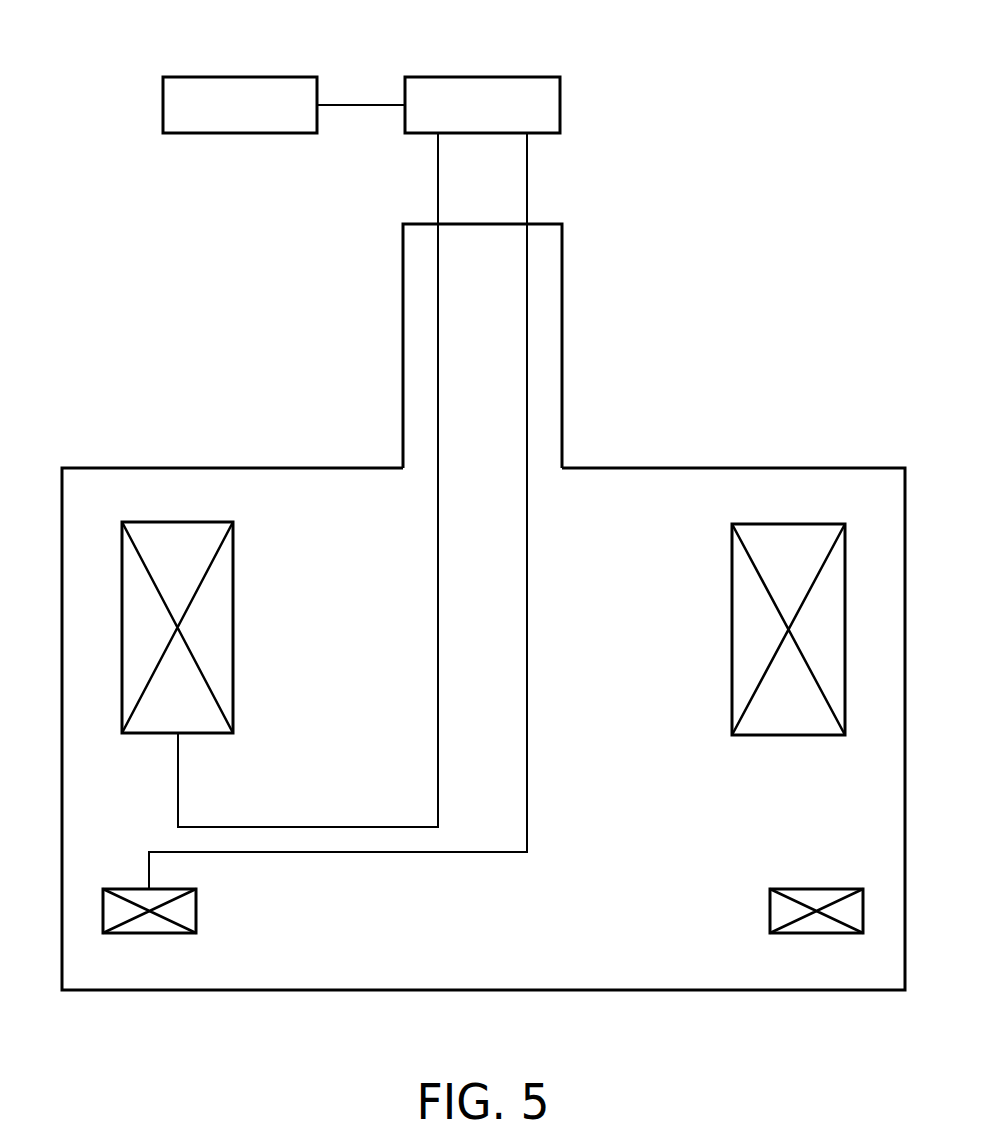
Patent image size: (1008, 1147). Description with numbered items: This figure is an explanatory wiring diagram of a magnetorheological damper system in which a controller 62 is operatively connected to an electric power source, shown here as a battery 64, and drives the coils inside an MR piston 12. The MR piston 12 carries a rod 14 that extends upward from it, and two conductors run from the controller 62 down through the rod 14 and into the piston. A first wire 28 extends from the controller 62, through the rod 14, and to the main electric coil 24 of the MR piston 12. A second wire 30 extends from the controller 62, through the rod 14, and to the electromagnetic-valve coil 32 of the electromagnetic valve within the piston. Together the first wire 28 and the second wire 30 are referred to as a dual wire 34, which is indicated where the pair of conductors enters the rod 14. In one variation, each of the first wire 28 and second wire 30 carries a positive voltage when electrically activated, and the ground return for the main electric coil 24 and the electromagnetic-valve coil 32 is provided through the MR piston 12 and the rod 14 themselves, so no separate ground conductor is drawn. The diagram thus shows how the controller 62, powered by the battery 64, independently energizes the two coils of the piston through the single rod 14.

The MR piston 12 is at (702, 468).
The rod 14 is at (562, 350).
The main electric coil 24 is at (732, 632).
The first wire 28 is at (438, 587).
The second wire 30 is at (527, 591).
The electromagnetic-valve coil 32 is at (770, 912).
The dual wire 34 is at (405, 183).
The controller 62 is at (480, 77).
The battery 64 is at (236, 77).